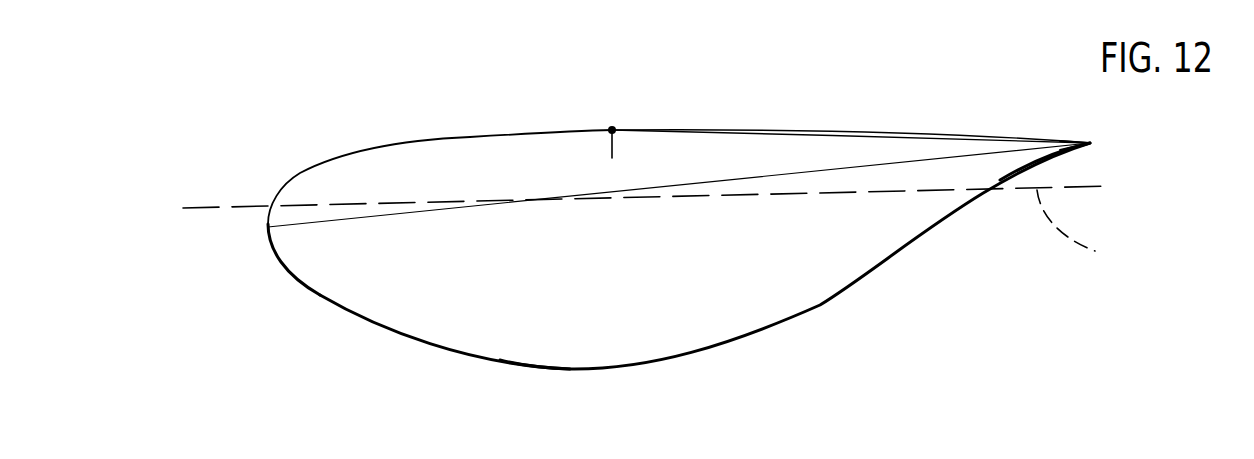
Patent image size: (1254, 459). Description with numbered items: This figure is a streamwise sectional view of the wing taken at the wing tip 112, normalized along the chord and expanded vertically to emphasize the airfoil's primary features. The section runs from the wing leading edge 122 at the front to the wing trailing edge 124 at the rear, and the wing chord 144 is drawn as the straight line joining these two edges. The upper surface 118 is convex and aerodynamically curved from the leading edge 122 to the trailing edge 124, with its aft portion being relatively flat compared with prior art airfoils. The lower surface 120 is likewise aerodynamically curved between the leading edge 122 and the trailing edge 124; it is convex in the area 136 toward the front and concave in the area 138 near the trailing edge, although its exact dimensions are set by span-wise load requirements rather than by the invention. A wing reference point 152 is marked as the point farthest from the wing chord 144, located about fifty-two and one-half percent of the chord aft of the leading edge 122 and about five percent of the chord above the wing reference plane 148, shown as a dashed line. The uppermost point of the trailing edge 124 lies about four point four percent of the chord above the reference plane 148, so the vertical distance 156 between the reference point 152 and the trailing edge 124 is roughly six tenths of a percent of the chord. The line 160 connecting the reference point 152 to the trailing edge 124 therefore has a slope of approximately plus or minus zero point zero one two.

The wing tip 112 is at (270, 187).
The wing leading edge 122 is at (268, 227).
The wing chord 144 is at (412, 213).
The lower wing surface 120 is at (693, 355).
The convex area of lower surface 136 is at (533, 369).
The wing reference point 152 is at (608, 127).
The vertical distance line 156 is at (612, 150).
The upper wing surface 118 is at (915, 131).
The line connecting reference point and trailing edge 160 is at (945, 140).
The wing trailing edge 124 is at (1092, 142).
The concave area of lower surface 138 is at (1040, 163).
The wing reference plane 148 is at (1095, 251).